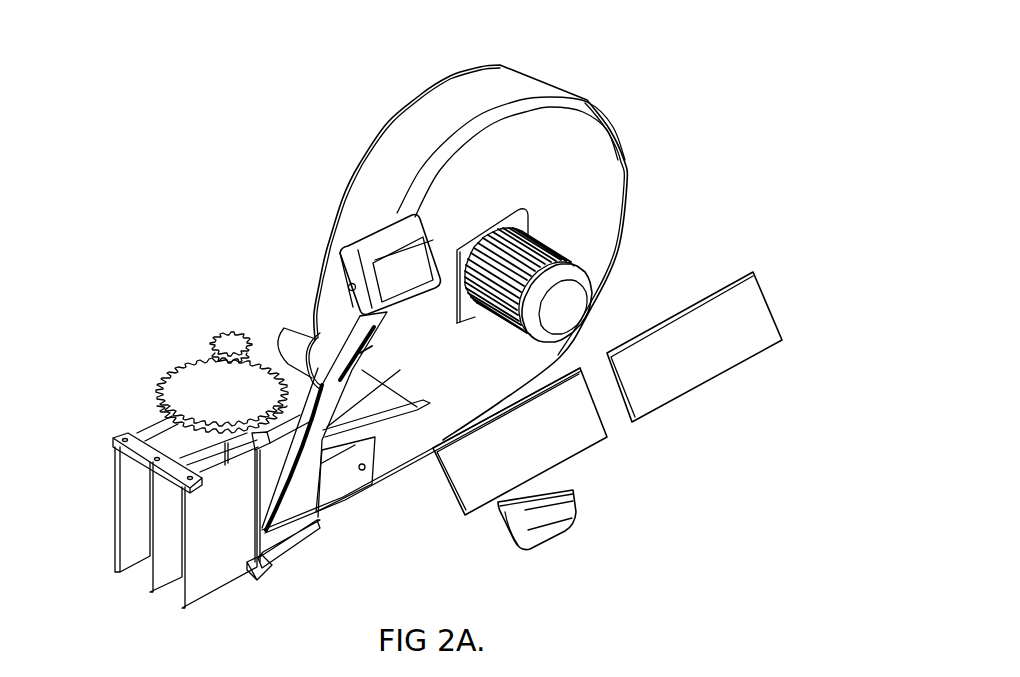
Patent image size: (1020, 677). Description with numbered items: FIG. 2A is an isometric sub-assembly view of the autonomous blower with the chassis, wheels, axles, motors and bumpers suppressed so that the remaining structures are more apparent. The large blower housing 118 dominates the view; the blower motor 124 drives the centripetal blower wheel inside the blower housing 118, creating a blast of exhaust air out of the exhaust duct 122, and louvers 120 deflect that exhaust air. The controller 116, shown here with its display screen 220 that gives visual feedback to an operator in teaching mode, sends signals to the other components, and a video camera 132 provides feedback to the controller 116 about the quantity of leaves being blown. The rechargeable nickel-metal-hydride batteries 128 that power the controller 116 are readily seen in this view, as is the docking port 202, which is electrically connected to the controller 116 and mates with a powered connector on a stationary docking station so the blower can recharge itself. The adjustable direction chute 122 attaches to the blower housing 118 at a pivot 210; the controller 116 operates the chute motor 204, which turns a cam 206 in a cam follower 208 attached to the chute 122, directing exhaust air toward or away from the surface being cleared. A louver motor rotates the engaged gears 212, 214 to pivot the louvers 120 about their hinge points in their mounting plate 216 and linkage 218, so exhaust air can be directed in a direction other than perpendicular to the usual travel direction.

The blower housing 118 is at (502, 88).
The blower motor 124 is at (560, 272).
The display screen 220 is at (397, 218).
The controller 116 is at (403, 257).
The video camera 132 is at (343, 250).
The cam 206 is at (331, 345).
The chute motor 204 is at (297, 333).
The gear 212 is at (225, 336).
The gear 214 is at (200, 376).
The linkage 218 is at (130, 442).
The louvers 120 is at (157, 505).
The mounting plate 216 is at (273, 462).
The exhaust duct 122 is at (328, 478).
The pivot 210 is at (372, 472).
The cam follower 208 is at (387, 350).
The docking port 202 is at (537, 523).
The batteries 128 is at (573, 430).